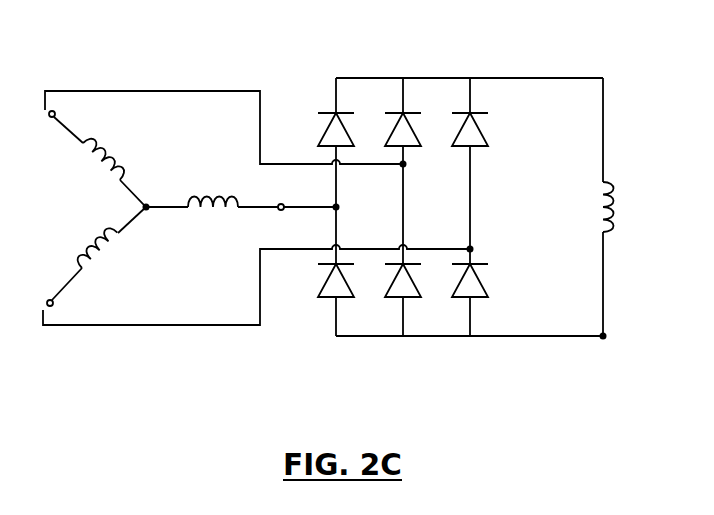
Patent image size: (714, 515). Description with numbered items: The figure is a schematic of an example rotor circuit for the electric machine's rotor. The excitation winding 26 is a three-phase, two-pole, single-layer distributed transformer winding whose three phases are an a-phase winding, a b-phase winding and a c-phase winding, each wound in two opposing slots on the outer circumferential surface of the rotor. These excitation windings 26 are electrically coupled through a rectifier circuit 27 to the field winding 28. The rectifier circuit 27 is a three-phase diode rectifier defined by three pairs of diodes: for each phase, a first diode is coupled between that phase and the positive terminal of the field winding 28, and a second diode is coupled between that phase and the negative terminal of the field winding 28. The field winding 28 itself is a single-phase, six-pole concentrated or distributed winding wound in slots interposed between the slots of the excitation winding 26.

The excitation winding 26 is at (157, 91).
The rectifier circuit 27 is at (523, 78).
The field winding 28 is at (635, 280).